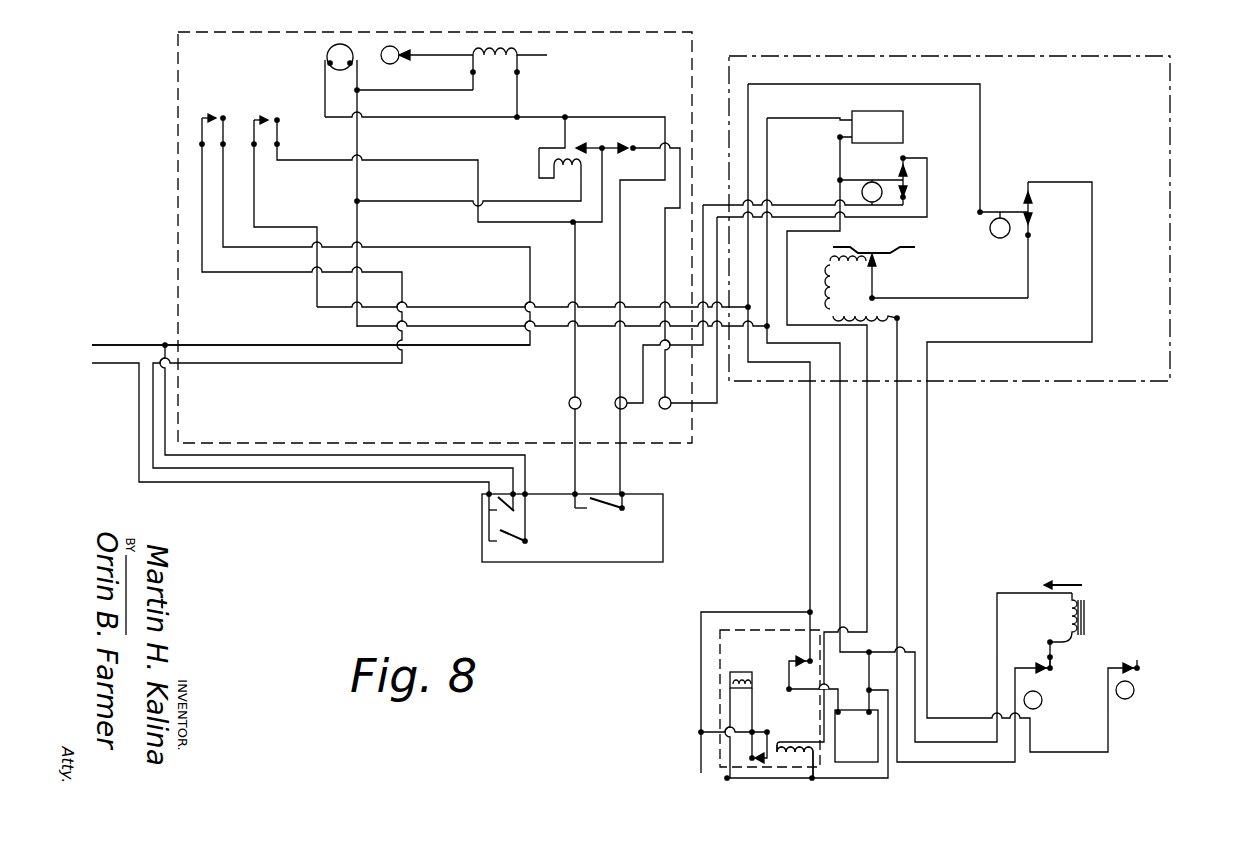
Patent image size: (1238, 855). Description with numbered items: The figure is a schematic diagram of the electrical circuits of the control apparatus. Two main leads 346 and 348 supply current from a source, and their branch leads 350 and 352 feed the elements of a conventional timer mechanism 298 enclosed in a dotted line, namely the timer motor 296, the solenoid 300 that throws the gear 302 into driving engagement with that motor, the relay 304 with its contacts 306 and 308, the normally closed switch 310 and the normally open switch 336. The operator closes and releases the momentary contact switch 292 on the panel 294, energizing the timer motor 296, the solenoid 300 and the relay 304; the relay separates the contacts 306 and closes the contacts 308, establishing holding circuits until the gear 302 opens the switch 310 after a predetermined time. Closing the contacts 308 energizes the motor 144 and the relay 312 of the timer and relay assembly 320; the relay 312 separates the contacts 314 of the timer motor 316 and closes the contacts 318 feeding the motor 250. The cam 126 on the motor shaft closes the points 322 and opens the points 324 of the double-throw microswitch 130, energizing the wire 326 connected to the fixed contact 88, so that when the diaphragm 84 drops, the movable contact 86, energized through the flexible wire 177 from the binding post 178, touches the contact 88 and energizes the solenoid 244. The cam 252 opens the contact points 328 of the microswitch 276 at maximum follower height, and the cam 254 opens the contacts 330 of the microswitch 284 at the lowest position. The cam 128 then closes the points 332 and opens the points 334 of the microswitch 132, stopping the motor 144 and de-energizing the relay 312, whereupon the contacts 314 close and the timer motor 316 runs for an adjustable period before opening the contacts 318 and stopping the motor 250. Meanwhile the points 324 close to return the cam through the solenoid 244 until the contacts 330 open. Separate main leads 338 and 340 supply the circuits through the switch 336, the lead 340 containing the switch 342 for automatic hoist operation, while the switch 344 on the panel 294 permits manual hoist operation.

The flexible diaphragm 84 is at (832, 250).
The movable contact 86 is at (880, 248).
The fixed contact 88 is at (919, 494).
The cam 126 is at (994, 234).
The cam 128 is at (878, 183).
The double-throw microswitch 130 is at (1034, 206).
The microswitch 132 is at (908, 177).
The motor 144 is at (877, 127).
The flexible wire 177 is at (826, 290).
The binding post 178 is at (905, 319).
The solenoid 244 is at (1085, 596).
The motor 250 is at (856, 736).
The cam 252 is at (1038, 690).
The cam 254 is at (1128, 683).
The microswitch 276 is at (1053, 663).
The microswitch 284 is at (1140, 663).
The momentary contact switch 292 is at (596, 515).
The panel 294 is at (560, 563).
The timer motor 296 is at (340, 44).
The timer mechanism 298 is at (172, 75).
The solenoid 300 is at (498, 47).
The gear 302 is at (392, 46).
The relay 304 is at (549, 172).
The contacts 306 is at (627, 143).
The contacts 308 is at (571, 140).
The normally closed switch 310 is at (277, 119).
The relay 312 is at (795, 748).
The contacts 314 is at (759, 765).
The timer motor 316 is at (738, 672).
The contacts 318 is at (800, 656).
The timer and relay assembly 320 is at (737, 630).
The points 322 is at (1032, 235).
The points 324 is at (1014, 190).
The wire 326 is at (1030, 298).
The contact points 328 is at (1047, 663).
The contacts 330 is at (1142, 668).
The points 332 is at (905, 156).
The contact points 334 is at (908, 193).
The normally open switch 336 is at (221, 114).
The main lead 338 is at (112, 344).
The main lead 340 is at (112, 364).
The switch 342 is at (492, 512).
The switch 344 is at (492, 543).
The main lead 346 is at (808, 470).
The main lead 348 is at (840, 512).
The branch lead 350 is at (474, 307).
The branch lead 352 is at (548, 332).